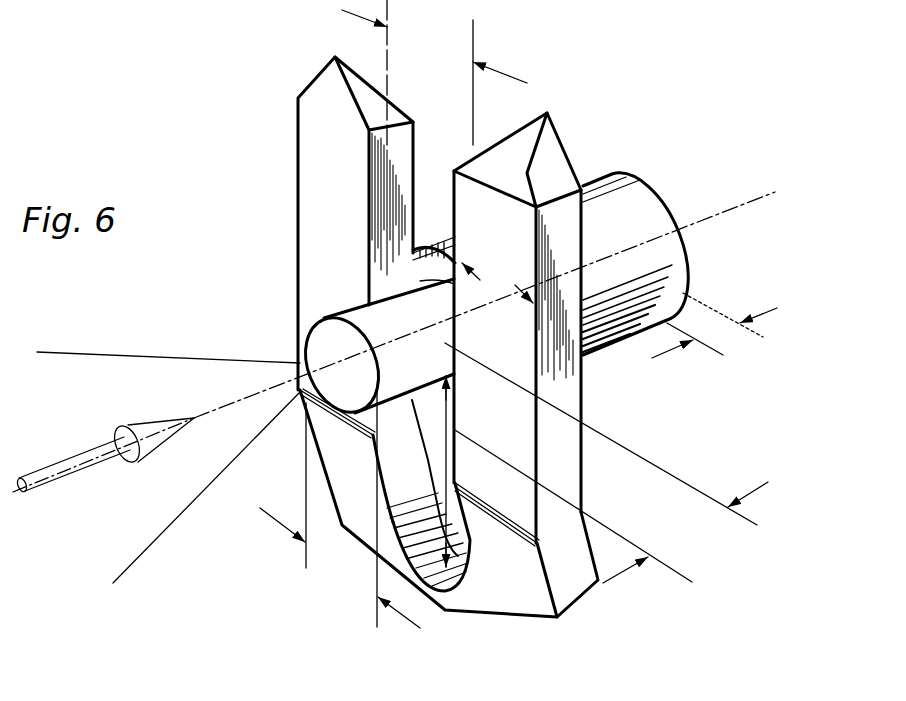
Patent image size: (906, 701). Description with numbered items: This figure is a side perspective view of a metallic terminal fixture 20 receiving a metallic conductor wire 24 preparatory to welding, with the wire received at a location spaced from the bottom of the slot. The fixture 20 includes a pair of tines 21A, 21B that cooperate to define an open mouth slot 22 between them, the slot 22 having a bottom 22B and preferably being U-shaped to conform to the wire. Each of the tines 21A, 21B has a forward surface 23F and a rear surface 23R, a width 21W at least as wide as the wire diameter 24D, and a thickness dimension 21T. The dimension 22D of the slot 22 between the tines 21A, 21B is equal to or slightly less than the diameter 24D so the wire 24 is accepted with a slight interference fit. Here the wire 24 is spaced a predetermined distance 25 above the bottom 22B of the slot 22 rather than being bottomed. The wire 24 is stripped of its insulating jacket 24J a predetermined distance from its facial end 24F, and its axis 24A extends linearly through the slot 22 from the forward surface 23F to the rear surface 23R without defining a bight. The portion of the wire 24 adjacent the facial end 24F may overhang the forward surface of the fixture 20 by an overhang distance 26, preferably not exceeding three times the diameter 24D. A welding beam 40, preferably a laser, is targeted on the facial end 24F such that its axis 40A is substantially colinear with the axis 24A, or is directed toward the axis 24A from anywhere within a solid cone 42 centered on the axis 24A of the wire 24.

The terminal fixture 20 is at (283, 248).
The tine 21A is at (298, 118).
The tine 21B is at (568, 153).
The thickness dimension 21T is at (714, 325).
The width 21W is at (497, 283).
The slot 22 is at (435, 185).
The bottom 22B is at (450, 588).
The dimension 22D is at (434, 75).
The forward surface 23F is at (328, 162).
The rear surface 23R is at (460, 117).
The conductor wire 24 is at (355, 298).
The axis 24A is at (437, 327).
The diameter 24D is at (340, 509).
The facial end 24F is at (325, 340).
The insulating jacket 24J is at (627, 215).
The predetermined distance 25 is at (445, 450).
The overhang distance 26 is at (606, 463).
The welding beam 40 is at (85, 455).
The axis of the welding beam 40A is at (95, 457).
The solid cone 42 is at (158, 353).